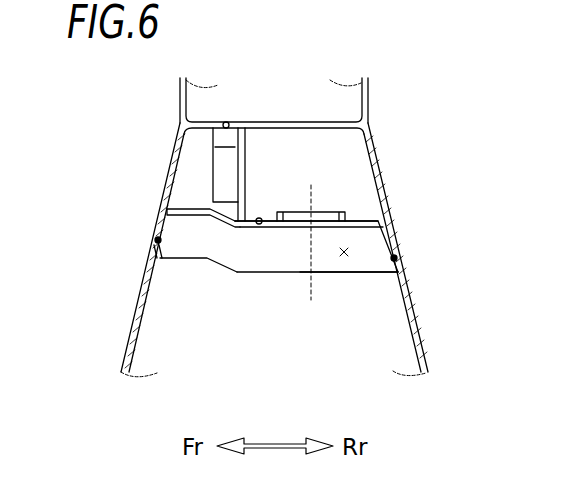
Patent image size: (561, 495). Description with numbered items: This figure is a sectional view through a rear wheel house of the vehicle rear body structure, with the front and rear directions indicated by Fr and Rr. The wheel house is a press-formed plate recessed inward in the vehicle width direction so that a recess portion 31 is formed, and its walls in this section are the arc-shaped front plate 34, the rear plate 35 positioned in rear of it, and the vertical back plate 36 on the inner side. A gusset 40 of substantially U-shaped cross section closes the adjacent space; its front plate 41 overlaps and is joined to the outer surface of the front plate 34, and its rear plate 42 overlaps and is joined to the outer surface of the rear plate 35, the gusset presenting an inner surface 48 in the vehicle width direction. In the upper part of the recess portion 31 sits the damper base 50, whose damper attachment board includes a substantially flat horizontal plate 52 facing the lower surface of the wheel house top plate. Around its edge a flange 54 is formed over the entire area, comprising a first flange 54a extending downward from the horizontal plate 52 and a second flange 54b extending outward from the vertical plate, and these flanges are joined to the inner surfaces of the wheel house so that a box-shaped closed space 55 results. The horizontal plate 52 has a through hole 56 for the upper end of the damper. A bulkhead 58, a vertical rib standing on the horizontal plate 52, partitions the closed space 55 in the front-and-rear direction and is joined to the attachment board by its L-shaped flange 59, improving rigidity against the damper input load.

The recess portion 31 is at (395, 332).
The front plate 34 is at (135, 316).
The rear plate 35 is at (415, 308).
The back plate 36 is at (405, 356).
The gusset 40 is at (176, 95).
The front plate 41 is at (148, 256).
The rear plate 42 is at (406, 258).
The inner surface 48 is at (362, 103).
The damper base 50 is at (358, 266).
The horizontal plate 52 is at (363, 221).
The flange 54 is at (226, 313).
The first flange 54a is at (275, 262).
The second flange 54b is at (163, 247).
The closed space 55 is at (328, 164).
The through hole 56 is at (328, 209).
The bulkhead 58 is at (241, 142).
The flange 59 is at (260, 219).